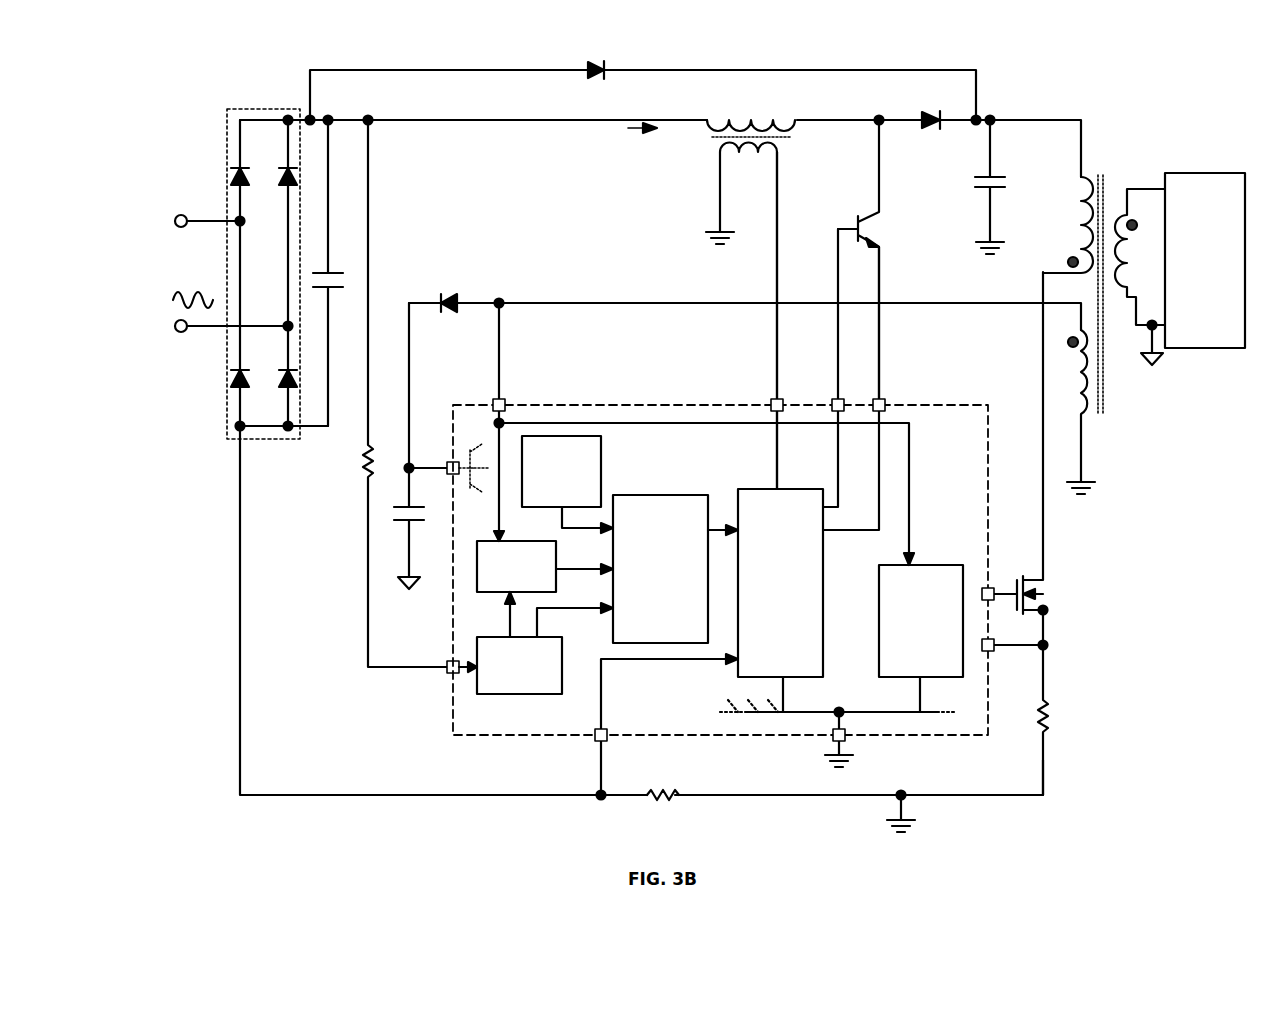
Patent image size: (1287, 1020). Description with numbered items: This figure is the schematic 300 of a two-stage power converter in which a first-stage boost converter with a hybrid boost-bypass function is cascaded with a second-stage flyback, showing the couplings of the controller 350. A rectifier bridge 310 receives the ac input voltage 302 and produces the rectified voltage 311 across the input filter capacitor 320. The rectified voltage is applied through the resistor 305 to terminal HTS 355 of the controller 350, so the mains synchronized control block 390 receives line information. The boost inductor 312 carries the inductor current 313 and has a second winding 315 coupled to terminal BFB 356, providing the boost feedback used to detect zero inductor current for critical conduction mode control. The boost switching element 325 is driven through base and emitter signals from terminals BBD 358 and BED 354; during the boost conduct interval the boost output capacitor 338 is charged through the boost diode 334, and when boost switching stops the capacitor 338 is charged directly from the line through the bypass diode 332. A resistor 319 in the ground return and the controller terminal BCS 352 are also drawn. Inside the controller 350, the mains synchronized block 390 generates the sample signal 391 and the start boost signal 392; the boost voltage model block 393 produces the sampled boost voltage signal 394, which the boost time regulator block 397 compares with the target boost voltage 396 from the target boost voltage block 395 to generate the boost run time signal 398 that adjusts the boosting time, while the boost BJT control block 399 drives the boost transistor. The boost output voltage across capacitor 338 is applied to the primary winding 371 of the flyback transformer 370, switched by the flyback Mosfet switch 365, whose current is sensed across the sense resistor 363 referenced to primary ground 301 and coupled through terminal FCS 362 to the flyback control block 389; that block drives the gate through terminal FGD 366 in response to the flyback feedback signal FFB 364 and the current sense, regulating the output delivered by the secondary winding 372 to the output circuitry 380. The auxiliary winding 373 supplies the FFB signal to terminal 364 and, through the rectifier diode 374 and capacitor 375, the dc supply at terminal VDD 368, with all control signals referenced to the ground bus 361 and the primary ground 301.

The power converter 300 is at (258, 61).
The primary ground 301 is at (708, 226).
The input ac voltage VAC 302 is at (192, 272).
The resistor 305 is at (354, 440).
The rectifier bridge 310 is at (268, 104).
The rectified voltage VREC 311 is at (393, 142).
The boost inductor LB 312 is at (748, 112).
The inductor current IL 313 is at (632, 130).
The second winding 315 is at (749, 145).
The resistor 319 is at (668, 809).
The input filter capacitor 320 is at (344, 266).
The boost switching element QB 325 is at (878, 222).
The bypass diode Dbp 332 is at (608, 62).
The boost diode DB 334 is at (928, 110).
The boost output capacitor 338 is at (1005, 177).
The controller 350 is at (622, 375).
The BCS pin (boost current sense) 352 is at (621, 751).
The terminal BED 354 is at (893, 380).
The terminal HTS 355 is at (384, 682).
The terminal BFB 356 is at (752, 386).
The terminal BBD 358 is at (816, 386).
The ground bus 361 is at (852, 694).
The terminal FCS 362 is at (1005, 660).
The sense resistor 363 is at (1052, 724).
The terminal FFB 364 is at (505, 395).
The Mosfet switch MF 365 is at (1048, 600).
The terminal FGD 366 is at (1002, 585).
The terminal VDD 368 is at (426, 446).
The flyback transformer 370 is at (1118, 148).
The primary winding 371 is at (1066, 227).
The secondary winding 372 is at (1126, 247).
The auxiliary winding 373 is at (1085, 418).
The rectifier diode 374 is at (449, 302).
The capacitor 375 is at (398, 516).
The output circuitry 380 is at (1186, 165).
The Flyback Control block 389 is at (923, 560).
The mains synchronized control block 390 is at (519, 696).
The sample signal 391 is at (508, 612).
The start boost signal 392 is at (588, 602).
The Vboost Model block 393 is at (516, 522).
The sampled Vboost signal 394 is at (599, 562).
The Target Boost Voltage block 395 is at (603, 456).
The target boost voltage 396 is at (605, 520).
The Boost Time Regulator block 397 is at (666, 495).
The Boost Run Time signal 398 is at (720, 518).
The Boost BJT Control block 399 is at (750, 490).